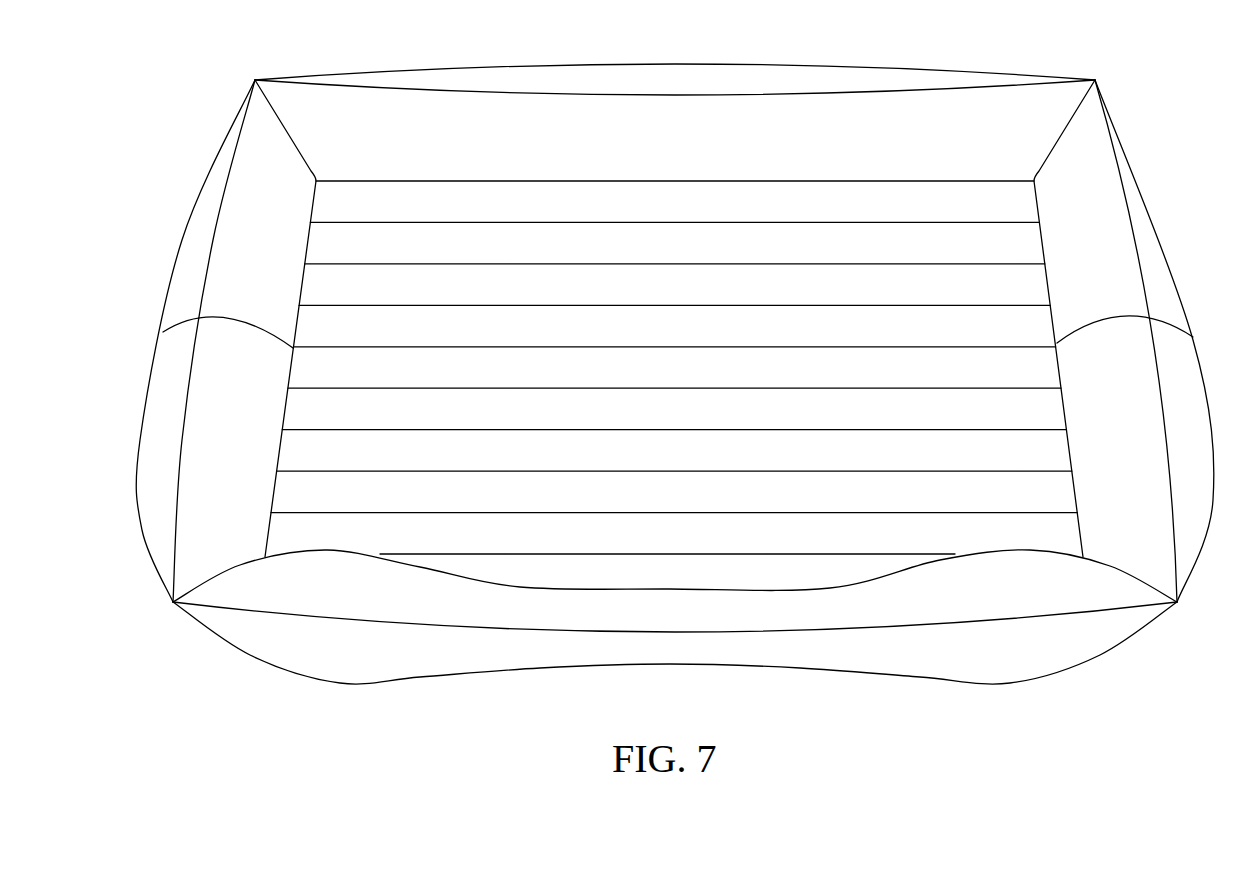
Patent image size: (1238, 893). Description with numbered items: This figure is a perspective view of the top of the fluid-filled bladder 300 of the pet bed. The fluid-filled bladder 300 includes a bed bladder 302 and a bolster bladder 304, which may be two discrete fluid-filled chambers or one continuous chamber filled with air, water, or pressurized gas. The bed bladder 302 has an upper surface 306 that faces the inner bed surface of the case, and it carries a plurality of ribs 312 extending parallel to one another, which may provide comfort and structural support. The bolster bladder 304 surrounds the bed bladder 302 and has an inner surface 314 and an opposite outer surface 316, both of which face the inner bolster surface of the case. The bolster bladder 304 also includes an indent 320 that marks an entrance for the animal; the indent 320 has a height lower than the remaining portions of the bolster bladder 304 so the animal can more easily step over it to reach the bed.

The fluid-filled bladder 300 is at (1116, 56).
The bed bladder 302 is at (1036, 482).
The bolster bladder 304 is at (1135, 185).
The upper surface 306 is at (990, 530).
The ribs 312 is at (647, 215).
The inner surface 314 is at (262, 245).
The outer surface 316 is at (182, 300).
The indent 320 is at (678, 645).